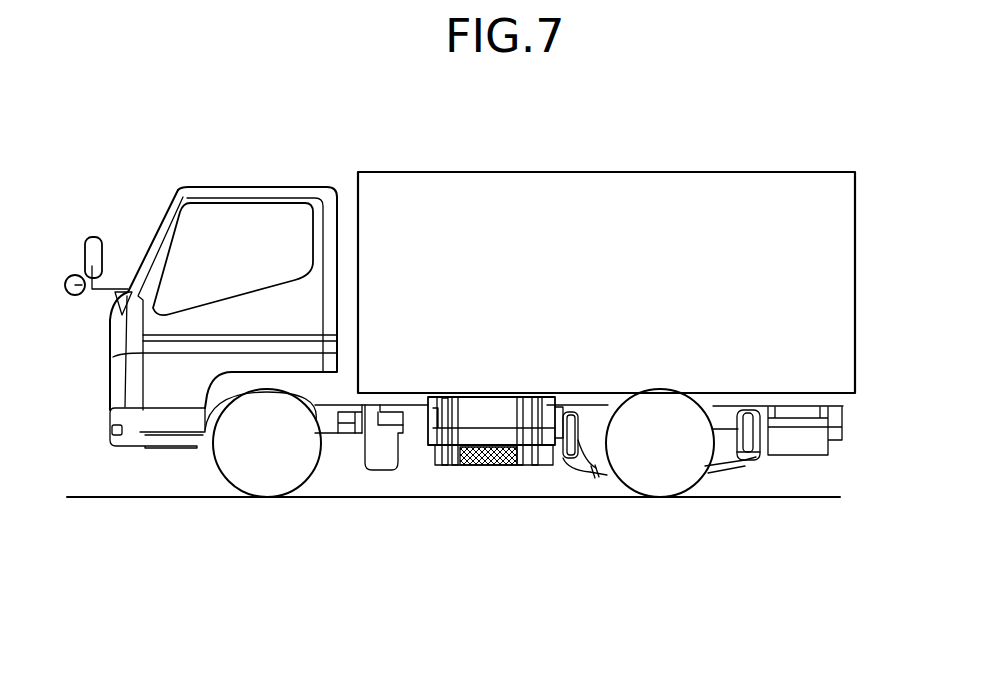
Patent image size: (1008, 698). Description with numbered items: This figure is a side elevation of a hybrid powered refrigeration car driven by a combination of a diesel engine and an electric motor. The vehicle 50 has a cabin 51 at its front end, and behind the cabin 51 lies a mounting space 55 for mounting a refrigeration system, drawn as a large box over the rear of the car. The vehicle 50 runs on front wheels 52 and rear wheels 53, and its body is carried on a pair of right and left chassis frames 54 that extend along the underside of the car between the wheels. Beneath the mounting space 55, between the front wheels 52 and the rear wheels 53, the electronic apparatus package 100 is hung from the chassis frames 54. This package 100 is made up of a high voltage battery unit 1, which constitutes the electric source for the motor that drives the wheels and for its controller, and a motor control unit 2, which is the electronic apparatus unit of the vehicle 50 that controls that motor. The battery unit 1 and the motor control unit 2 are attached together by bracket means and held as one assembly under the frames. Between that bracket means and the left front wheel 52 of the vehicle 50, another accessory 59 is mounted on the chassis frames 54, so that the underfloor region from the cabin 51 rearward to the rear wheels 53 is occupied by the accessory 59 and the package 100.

The vehicle 50 is at (188, 168).
The cabin 51 is at (278, 193).
The front wheels 52 is at (227, 491).
The rear wheels 53 is at (693, 485).
The chassis frames 54 is at (586, 401).
The mounting space 55 is at (583, 172).
The other accessory 59 is at (388, 448).
The electronic apparatus package 100 is at (428, 452).
The high voltage battery unit 1 is at (478, 411).
The motor control unit 2 is at (490, 465).